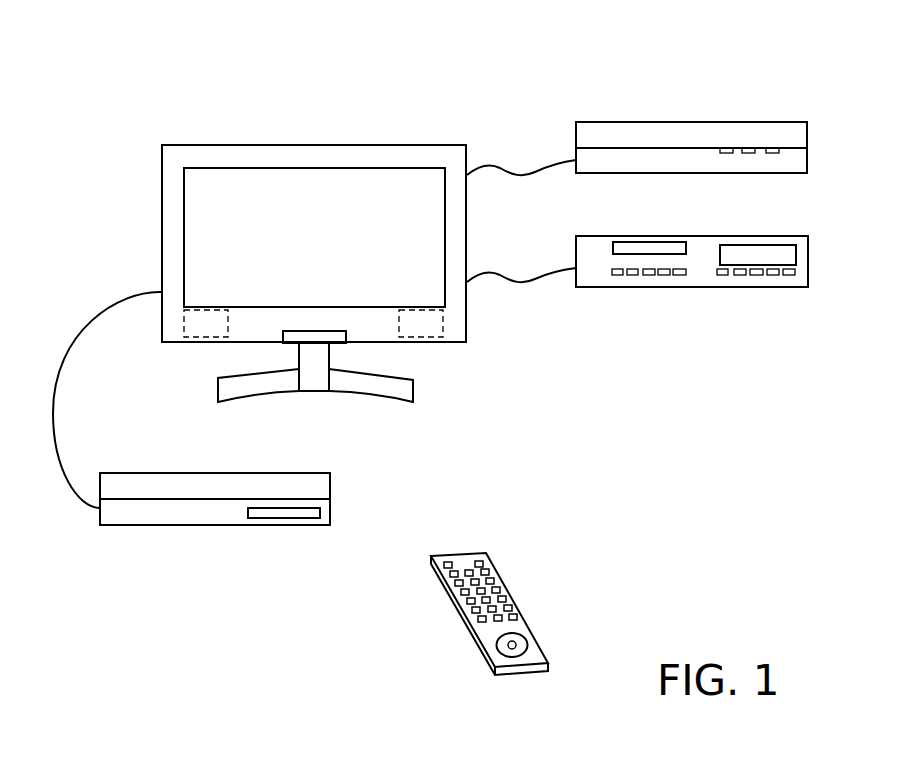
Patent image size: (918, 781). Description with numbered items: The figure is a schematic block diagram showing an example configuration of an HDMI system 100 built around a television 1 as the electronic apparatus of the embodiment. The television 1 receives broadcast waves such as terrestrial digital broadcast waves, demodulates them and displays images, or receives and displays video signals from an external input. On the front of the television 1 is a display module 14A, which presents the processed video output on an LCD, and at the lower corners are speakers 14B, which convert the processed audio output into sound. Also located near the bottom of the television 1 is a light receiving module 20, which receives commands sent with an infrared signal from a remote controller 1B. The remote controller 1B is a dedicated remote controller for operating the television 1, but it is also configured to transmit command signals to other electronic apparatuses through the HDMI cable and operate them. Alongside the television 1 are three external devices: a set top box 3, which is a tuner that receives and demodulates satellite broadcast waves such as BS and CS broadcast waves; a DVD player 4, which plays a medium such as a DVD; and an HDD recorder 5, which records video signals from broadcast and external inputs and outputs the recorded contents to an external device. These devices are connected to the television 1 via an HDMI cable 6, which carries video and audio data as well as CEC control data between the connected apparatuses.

The HDMI system 100 is at (531, 45).
The television 1 is at (203, 158).
The display module 14A is at (365, 187).
The speaker 14B is at (193, 343).
The light receiving module 20 is at (313, 337).
The set top box 3 is at (602, 137).
The DVD player 4 is at (601, 247).
The HDD recorder 5 is at (127, 517).
The HDMI cable 6 is at (55, 435).
The remote controller 1B is at (522, 630).